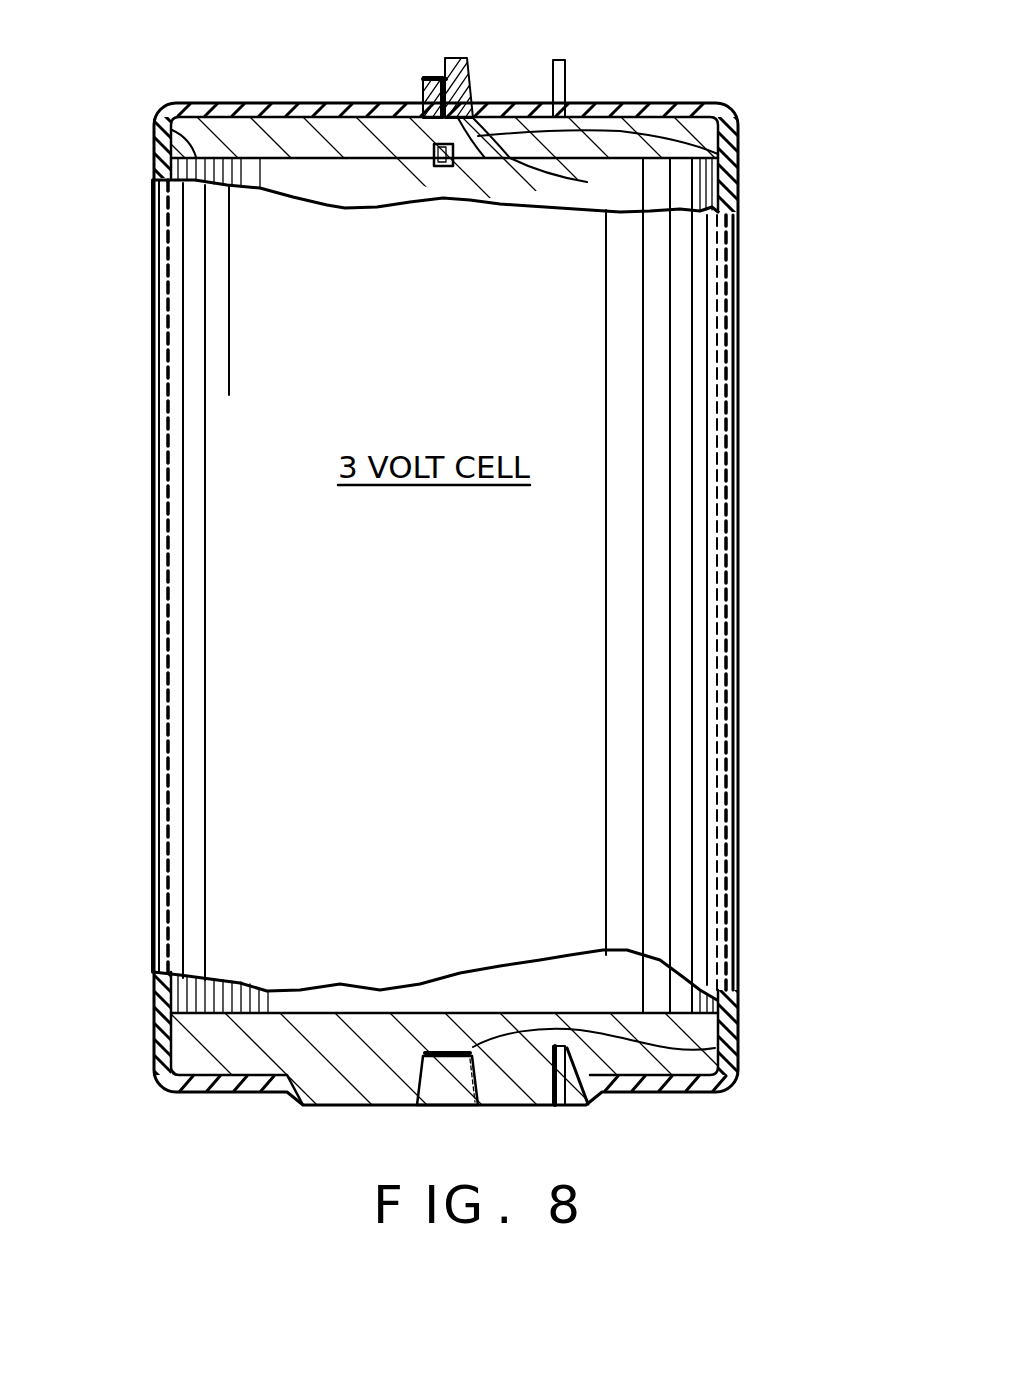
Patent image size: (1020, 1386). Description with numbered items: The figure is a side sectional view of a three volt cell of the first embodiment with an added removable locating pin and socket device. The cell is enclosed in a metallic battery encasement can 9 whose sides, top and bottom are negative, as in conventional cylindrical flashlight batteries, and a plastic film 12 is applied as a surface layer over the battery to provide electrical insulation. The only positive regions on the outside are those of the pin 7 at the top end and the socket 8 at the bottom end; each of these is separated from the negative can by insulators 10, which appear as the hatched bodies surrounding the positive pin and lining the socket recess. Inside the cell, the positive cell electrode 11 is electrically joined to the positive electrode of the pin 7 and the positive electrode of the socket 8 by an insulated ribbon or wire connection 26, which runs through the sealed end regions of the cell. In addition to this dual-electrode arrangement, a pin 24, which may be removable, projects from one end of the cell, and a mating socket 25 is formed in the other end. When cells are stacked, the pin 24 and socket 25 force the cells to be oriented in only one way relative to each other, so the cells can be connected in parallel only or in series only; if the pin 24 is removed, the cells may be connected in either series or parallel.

The pin 7 is at (433, 59).
The socket 8 is at (423, 1110).
The battery encasement can 9 is at (172, 130).
The insulators 10 is at (434, 77).
The positive cell electrode 11 is at (441, 167).
The plastic film 12 is at (154, 306).
The pin 24 is at (566, 75).
The mating socket 25 is at (587, 1104).
The insulated ribbon or wire connection 26 is at (663, 138).